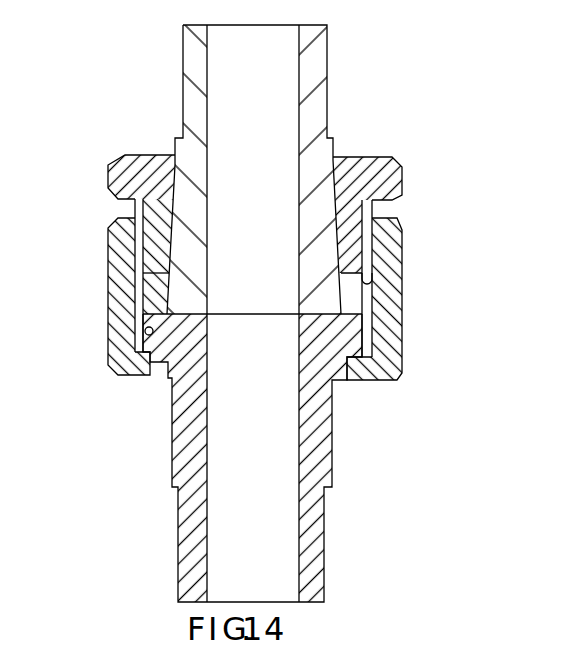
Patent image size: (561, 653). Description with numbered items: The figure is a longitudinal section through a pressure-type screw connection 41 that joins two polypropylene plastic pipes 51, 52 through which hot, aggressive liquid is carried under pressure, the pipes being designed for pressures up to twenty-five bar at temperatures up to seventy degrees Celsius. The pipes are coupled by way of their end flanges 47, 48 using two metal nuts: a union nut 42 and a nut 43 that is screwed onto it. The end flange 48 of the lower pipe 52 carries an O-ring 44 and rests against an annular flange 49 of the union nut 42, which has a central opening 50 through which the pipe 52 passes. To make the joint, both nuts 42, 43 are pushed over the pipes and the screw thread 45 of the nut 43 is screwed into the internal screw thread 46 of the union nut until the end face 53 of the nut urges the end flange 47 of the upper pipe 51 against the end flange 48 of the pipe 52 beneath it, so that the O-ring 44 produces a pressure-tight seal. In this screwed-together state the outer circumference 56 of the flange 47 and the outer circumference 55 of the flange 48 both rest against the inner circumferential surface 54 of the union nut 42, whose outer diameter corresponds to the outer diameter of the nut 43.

The pressure-type screw connection 41 is at (149, 68).
The union nut 42 is at (117, 248).
The nut 43 is at (119, 164).
The O-ring 44 is at (378, 342).
The screw thread 45 is at (373, 205).
The internal screw thread 46 is at (396, 262).
The end flange 47 is at (168, 291).
The end flange 48 is at (135, 352).
The annular flange 49 is at (349, 384).
The central opening 50 is at (165, 386).
The plastic pipe 51 is at (318, 67).
The plastic pipe 52 is at (184, 542).
The end face 53 is at (352, 278).
The inner circumferential surface 54 is at (145, 329).
The outer circumference 55 is at (384, 381).
The outer circumference 56 is at (372, 300).